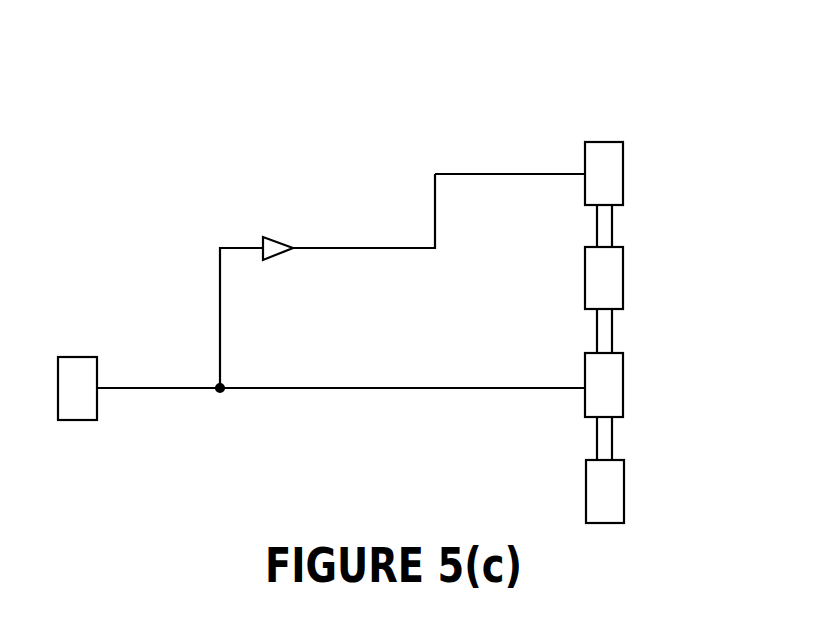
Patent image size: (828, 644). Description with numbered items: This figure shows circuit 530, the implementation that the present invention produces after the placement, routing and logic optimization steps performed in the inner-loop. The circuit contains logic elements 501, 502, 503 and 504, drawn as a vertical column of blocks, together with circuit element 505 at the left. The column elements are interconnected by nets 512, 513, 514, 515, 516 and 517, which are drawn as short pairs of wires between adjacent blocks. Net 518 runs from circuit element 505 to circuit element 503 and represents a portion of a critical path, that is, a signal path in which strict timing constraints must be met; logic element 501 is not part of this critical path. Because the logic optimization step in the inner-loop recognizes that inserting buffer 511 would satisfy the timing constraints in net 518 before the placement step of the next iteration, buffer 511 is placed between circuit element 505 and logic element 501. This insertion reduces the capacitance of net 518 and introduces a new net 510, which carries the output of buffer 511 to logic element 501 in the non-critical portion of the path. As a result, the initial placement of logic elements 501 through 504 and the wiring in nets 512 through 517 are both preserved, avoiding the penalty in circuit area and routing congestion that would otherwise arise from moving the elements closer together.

The logic element 501 is at (624, 163).
The circuit element 502 is at (624, 277).
The circuit element 503 is at (624, 385).
The circuit element 504 is at (625, 491).
The circuit element 505 is at (76, 357).
The net 510 is at (503, 172).
The buffer 511 is at (278, 239).
The net 512 is at (613, 222).
The net 513 is at (597, 222).
The net 514 is at (597, 328).
The net 515 is at (613, 328).
The net 516 is at (613, 435).
The net 517 is at (597, 437).
The net 518 is at (315, 389).
The circuit 530 is at (603, 93).